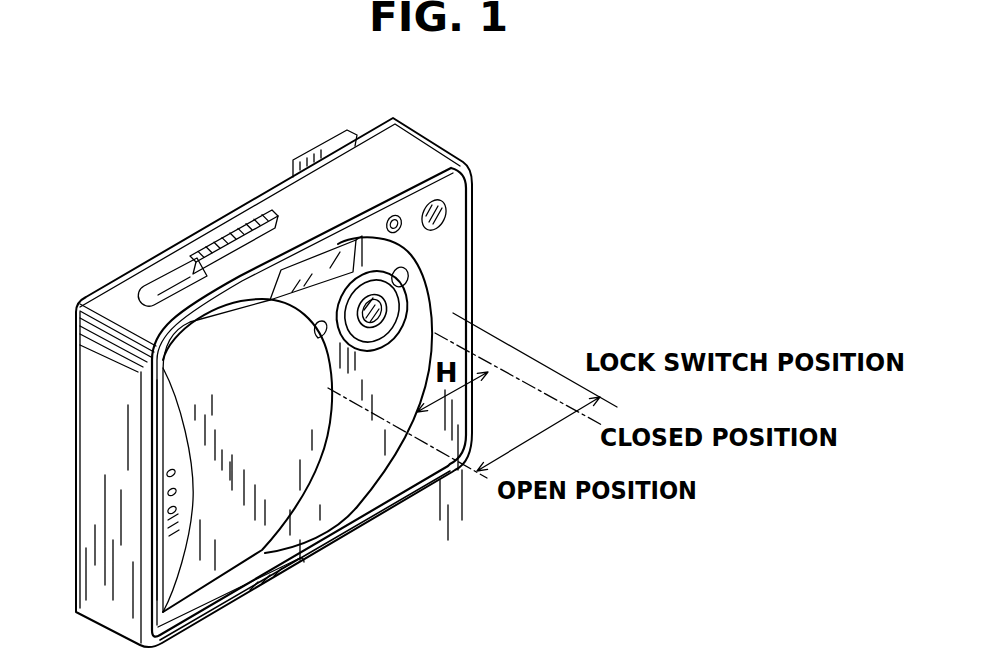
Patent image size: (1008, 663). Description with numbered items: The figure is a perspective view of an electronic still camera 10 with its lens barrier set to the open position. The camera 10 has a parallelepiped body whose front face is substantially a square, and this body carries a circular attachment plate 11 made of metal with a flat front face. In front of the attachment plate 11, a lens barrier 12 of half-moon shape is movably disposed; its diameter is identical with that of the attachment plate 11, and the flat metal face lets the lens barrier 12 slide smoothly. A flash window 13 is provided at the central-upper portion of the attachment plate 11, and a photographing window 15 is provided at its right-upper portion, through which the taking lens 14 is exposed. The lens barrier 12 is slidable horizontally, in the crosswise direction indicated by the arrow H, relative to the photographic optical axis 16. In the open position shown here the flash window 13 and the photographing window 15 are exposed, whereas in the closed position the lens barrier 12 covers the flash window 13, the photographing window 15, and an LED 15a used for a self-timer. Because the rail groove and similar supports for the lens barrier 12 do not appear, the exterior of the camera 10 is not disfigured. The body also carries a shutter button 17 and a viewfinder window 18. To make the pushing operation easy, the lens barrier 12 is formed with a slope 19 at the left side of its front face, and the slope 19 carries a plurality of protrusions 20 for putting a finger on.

The electronic still camera 10 is at (456, 147).
The attachment plate 11 is at (355, 481).
The lens barrier 12 is at (263, 459).
The flash window 13 is at (325, 262).
The taking lens 14 is at (380, 310).
The photographing window 15 is at (400, 288).
The LED 15a is at (318, 340).
The photographic optical axis 16 is at (411, 328).
The shutter button 17 is at (170, 284).
The viewfinder window 18 is at (448, 211).
The slope 19 is at (170, 424).
The protrusions 20 is at (170, 475).